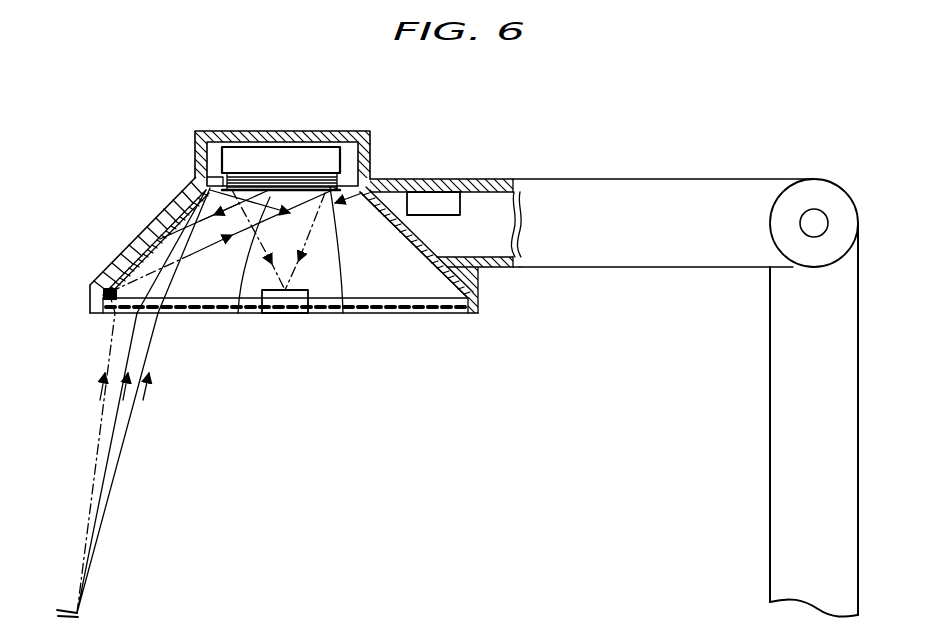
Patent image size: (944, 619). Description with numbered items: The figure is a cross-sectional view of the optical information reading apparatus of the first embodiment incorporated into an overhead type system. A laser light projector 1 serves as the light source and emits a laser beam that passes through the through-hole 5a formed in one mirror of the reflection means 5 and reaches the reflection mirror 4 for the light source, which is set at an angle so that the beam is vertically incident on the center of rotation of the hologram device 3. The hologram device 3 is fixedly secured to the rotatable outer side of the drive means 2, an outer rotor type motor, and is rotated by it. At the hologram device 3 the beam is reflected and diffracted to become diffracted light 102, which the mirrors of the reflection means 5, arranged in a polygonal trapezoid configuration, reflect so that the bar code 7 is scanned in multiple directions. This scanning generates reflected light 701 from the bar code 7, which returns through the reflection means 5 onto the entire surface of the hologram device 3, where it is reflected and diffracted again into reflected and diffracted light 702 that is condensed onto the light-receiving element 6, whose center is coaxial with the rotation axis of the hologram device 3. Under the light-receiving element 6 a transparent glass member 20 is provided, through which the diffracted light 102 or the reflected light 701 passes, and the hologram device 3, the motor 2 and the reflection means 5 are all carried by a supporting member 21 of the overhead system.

The laser light projector 1 is at (445, 203).
The drive means 2 is at (282, 158).
The hologram device 3 is at (247, 187).
The reflection mirror 4 is at (238, 313).
The reflection means 5 is at (437, 268).
The through-hole 5a is at (372, 190).
The light-receiving element 6 is at (293, 301).
The optical information recording medium 7 is at (92, 617).
The transparent glass member 20 is at (463, 300).
The supporting member 21 is at (577, 180).
The diffracted light 102 is at (170, 205).
The reflected light 701 is at (93, 485).
The reflected and diffracted light 702 is at (343, 313).